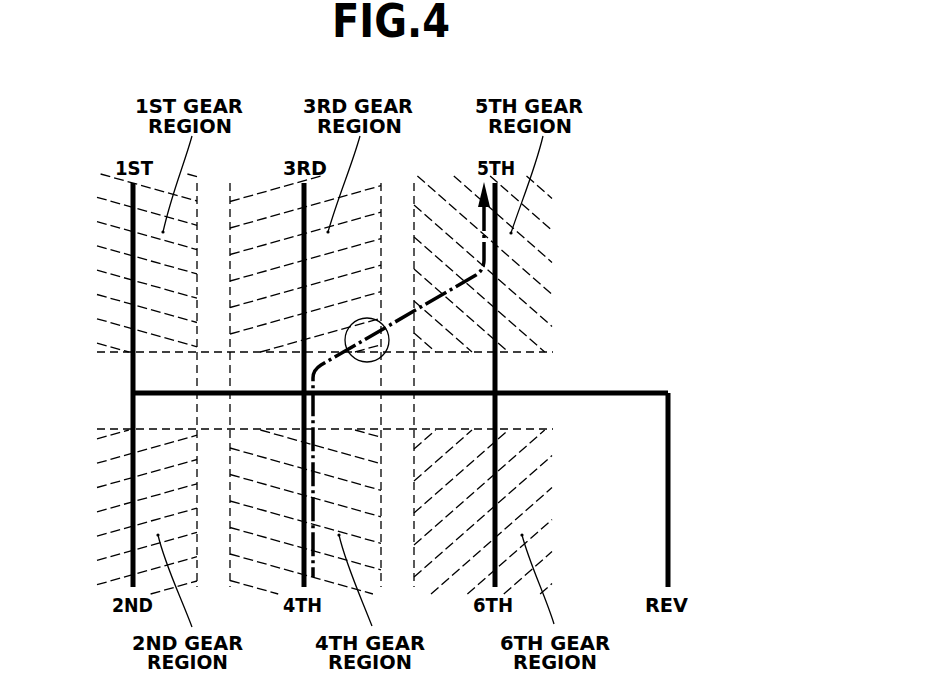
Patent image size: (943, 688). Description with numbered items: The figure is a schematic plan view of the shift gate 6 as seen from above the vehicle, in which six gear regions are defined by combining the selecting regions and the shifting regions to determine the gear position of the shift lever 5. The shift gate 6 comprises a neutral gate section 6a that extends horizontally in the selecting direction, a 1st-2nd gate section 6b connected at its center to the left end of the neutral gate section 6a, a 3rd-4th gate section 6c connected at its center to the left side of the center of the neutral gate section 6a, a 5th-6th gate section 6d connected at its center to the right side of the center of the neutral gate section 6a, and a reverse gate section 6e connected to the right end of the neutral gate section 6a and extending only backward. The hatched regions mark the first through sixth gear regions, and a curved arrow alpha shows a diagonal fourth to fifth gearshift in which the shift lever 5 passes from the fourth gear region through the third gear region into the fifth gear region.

The shift lever 5 is at (367, 362).
The shift gate 6 is at (392, 399).
The neutral gate section 6a is at (634, 391).
The 1st-2nd gate section 6b is at (133, 540).
The 3rd-4th gate section 6c is at (304, 537).
The 5th-6th gate section 6d is at (497, 494).
The reverse gate section 6e is at (668, 553).